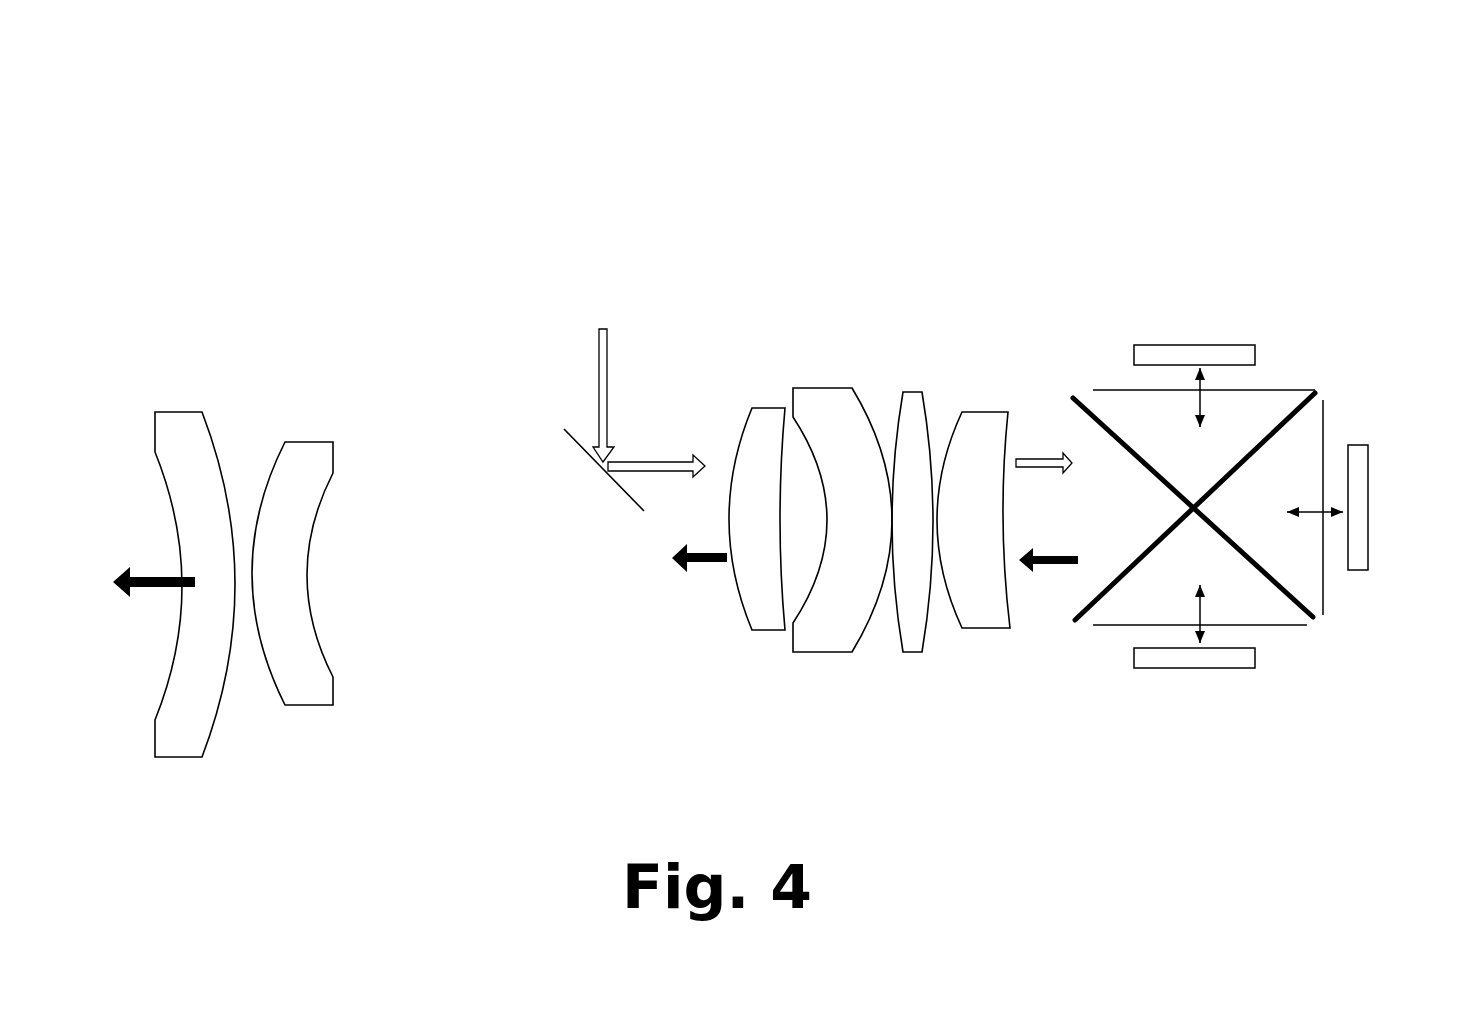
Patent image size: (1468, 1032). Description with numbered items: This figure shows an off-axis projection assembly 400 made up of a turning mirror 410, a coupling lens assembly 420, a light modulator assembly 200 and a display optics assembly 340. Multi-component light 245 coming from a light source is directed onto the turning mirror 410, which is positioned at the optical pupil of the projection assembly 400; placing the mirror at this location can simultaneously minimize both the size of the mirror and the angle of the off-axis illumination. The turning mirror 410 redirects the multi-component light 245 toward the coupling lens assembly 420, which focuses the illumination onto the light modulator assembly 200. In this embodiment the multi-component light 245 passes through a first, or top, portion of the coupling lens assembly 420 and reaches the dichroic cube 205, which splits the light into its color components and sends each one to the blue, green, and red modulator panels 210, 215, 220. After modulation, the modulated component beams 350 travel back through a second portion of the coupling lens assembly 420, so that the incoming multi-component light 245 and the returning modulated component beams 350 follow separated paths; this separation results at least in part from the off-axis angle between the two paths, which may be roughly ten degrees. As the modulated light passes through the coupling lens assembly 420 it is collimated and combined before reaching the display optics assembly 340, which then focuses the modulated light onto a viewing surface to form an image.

The off-axis projection assembly 400 is at (533, 143).
The display optics assembly 340 is at (253, 327).
The turning mirror 410 is at (603, 472).
The multi-component light 245 is at (607, 368).
The coupling lens assembly 420 is at (880, 350).
The modulated component beams 350 is at (1048, 567).
The light modulator assembly 200 is at (1170, 280).
The dichroic cube 205 is at (1075, 618).
The blue modulator panel 210 is at (1187, 668).
The green modulator panel 215 is at (1368, 507).
The red modulator panel 220 is at (1193, 345).